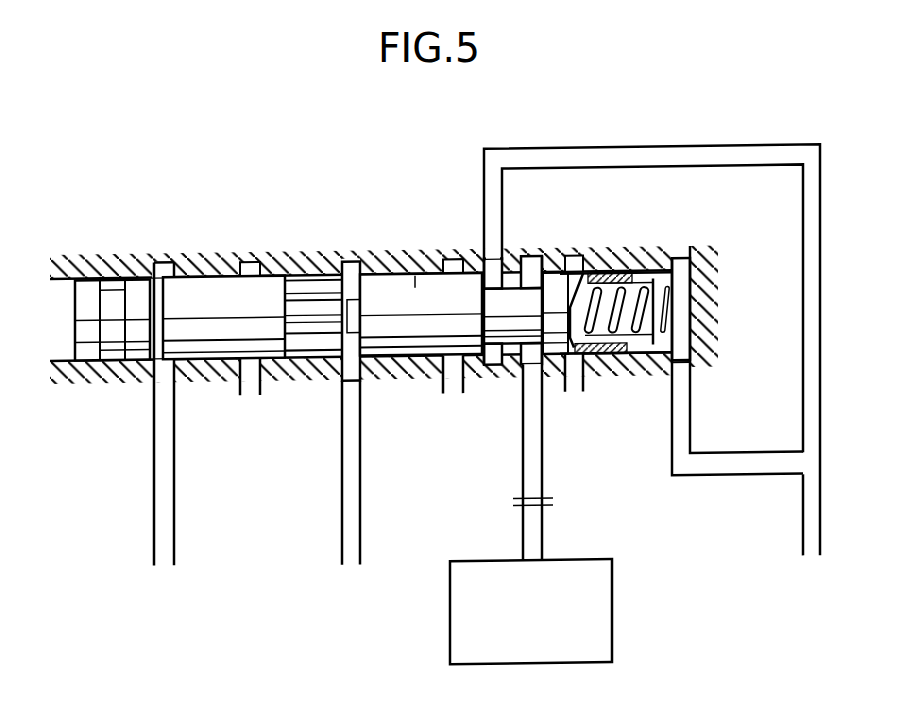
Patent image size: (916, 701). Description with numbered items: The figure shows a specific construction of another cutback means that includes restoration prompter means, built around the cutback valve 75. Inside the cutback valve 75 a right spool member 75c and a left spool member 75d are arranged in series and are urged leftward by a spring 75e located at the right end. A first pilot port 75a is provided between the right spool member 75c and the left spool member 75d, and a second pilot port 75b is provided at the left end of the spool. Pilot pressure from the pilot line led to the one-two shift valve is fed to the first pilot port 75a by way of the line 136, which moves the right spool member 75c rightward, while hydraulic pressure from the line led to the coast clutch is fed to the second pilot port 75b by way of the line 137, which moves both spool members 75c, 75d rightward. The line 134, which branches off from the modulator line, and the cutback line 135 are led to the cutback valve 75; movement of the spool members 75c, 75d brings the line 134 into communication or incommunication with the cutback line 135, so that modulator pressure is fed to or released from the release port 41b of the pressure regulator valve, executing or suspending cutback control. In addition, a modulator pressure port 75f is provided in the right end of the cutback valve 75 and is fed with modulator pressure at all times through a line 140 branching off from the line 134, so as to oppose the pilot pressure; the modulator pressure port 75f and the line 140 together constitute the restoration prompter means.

The cutback valve 75 is at (287, 208).
The first pilot port 75a is at (357, 377).
The second pilot port 75b is at (160, 374).
The right spool member 75c is at (414, 286).
The left spool member 75d is at (210, 288).
The spring 75e is at (692, 304).
The modulator pressure port 75f is at (676, 368).
The line 134 is at (810, 306).
The cutback line 135 is at (530, 470).
The line 136 is at (350, 485).
The line 137 is at (160, 437).
The line 140 is at (725, 469).
The release port of pressure regulator valve 41b is at (597, 562).